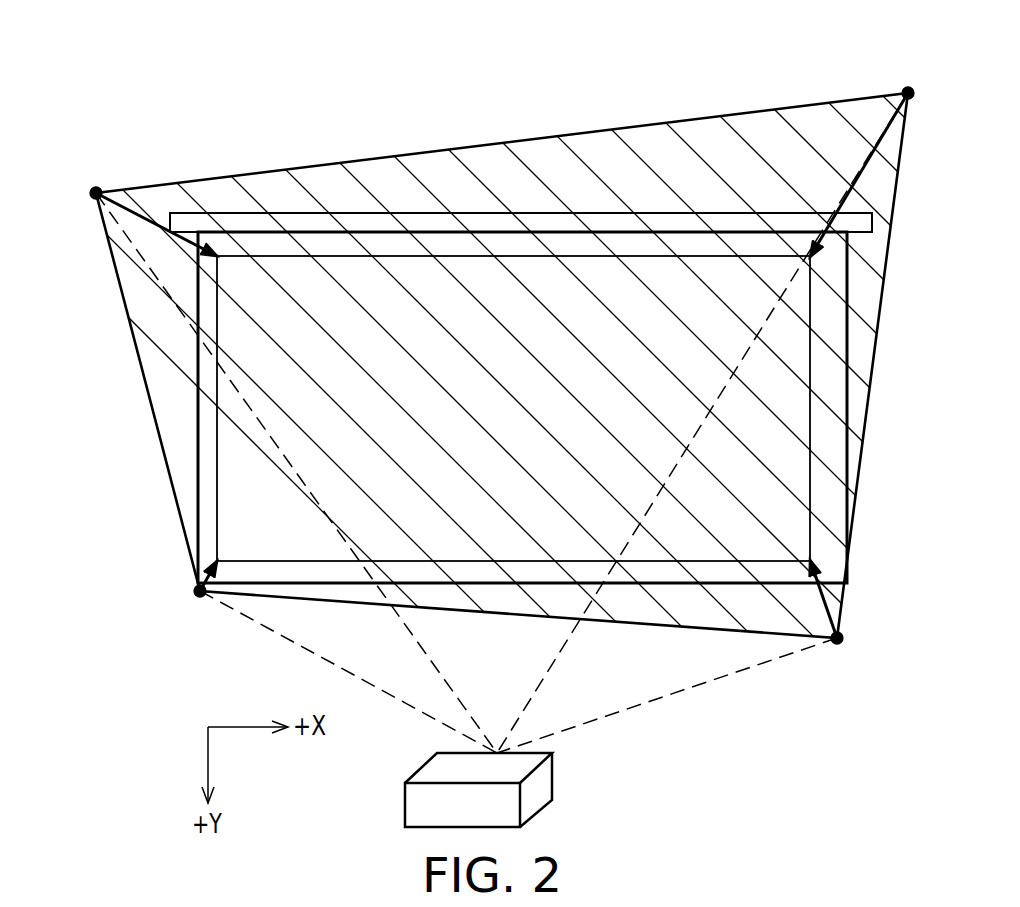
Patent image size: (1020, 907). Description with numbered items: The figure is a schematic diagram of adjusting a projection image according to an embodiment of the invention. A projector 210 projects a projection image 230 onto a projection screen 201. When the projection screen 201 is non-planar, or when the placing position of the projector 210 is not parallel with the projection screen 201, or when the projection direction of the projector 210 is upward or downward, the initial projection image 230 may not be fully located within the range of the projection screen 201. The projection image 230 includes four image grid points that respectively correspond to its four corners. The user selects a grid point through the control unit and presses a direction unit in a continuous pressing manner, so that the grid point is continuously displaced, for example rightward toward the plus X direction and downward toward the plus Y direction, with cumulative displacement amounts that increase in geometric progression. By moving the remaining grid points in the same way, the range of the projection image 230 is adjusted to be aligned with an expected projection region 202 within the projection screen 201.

The projection image 230 is at (712, 115).
The projection screen 201 is at (847, 425).
The expected projection region 202 is at (810, 512).
The projector 210 is at (555, 775).